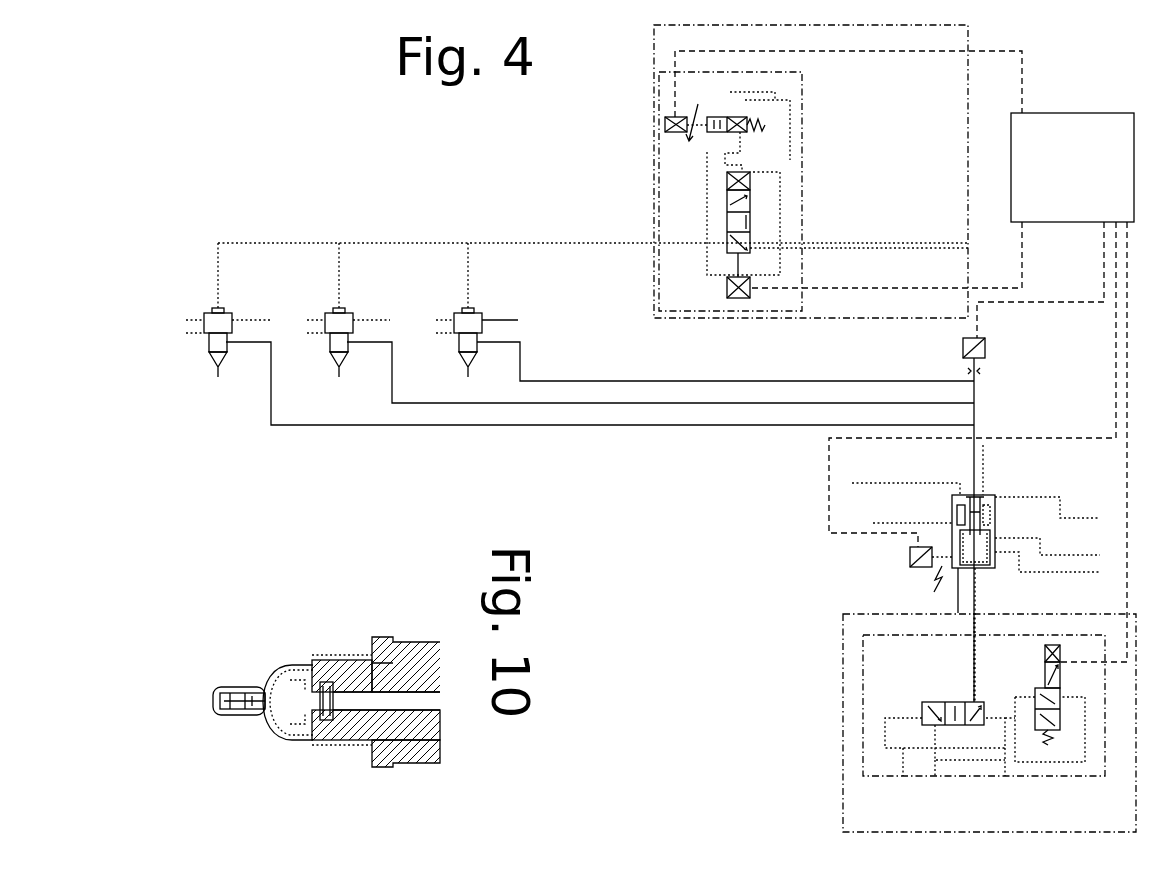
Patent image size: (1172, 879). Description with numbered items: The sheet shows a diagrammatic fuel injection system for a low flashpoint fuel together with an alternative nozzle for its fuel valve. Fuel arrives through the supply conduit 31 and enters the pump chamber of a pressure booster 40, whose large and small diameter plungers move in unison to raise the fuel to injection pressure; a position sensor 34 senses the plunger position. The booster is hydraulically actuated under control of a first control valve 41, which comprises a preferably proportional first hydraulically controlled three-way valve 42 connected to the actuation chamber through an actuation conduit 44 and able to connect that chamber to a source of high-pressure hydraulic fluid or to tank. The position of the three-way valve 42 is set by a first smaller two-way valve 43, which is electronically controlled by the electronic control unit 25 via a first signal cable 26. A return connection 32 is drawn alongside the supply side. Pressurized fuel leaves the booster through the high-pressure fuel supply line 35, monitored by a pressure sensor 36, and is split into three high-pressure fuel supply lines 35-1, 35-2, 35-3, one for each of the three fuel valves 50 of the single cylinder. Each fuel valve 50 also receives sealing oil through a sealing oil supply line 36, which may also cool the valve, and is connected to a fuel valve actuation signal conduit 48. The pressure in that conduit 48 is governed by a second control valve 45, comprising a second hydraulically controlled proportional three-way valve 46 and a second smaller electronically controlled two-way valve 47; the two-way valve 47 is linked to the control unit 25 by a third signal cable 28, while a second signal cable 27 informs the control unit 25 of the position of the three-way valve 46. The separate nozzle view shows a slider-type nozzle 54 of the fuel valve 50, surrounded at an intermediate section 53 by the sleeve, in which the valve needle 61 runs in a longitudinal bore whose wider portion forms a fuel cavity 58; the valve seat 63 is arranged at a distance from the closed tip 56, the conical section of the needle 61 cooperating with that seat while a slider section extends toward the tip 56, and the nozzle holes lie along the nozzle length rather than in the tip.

In FIG. 4, the electronic control unit 25 is at (1059, 181).
In FIG. 4, the first signal cable 26 is at (1128, 322).
In FIG. 4, the second signal cable 27 is at (1022, 262).
In FIG. 4, the third signal cable 28 is at (905, 52).
In FIG. 4, the supply conduit 31 is at (1080, 518).
In FIG. 4, the fuel return line 32 is at (1048, 572).
In FIG. 4, the position sensor 34 is at (908, 556).
In FIG. 4, the high-pressure fuel supply line 35 is at (975, 412).
In FIG. 4, the high-pressure fuel supply line 35-1 is at (558, 381).
In FIG. 4, the high-pressure fuel supply line 35-2 is at (410, 403).
In FIG. 4, the high-pressure fuel supply line 35-3 is at (290, 425).
In FIG. 4, the pressure sensor 36 is at (252, 320).
In FIG. 4, the pressure booster 40 is at (997, 491).
In FIG. 4, the first control valve 41 is at (863, 660).
In FIG. 4, the first hydraulically controlled three-way valve 42 is at (947, 702).
In FIG. 4, the first smaller two-way valve 43 is at (1040, 690).
In FIG. 4, the actuation conduit 44 is at (974, 596).
In FIG. 4, the second control valve 45 is at (660, 85).
In FIG. 4, the second hydraulically controlled three-way valve 46 is at (732, 192).
In FIG. 4, the second smaller two-way valve 47 is at (714, 117).
In FIG. 4, the fuel valve actuation signal conduit 48 is at (540, 243).
In FIG. 4, the fuel valve 50 is at (220, 315).
In FIG. 10, the intermediate section 53 is at (383, 640).
In FIG. 10, the nozzle 54 is at (238, 714).
In FIG. 10, the tip 56 is at (203, 707).
In FIG. 10, the fuel cavity 58 is at (325, 717).
In FIG. 10, the valve needle 61 is at (358, 703).
In FIG. 10, the valve seat 63 is at (318, 690).